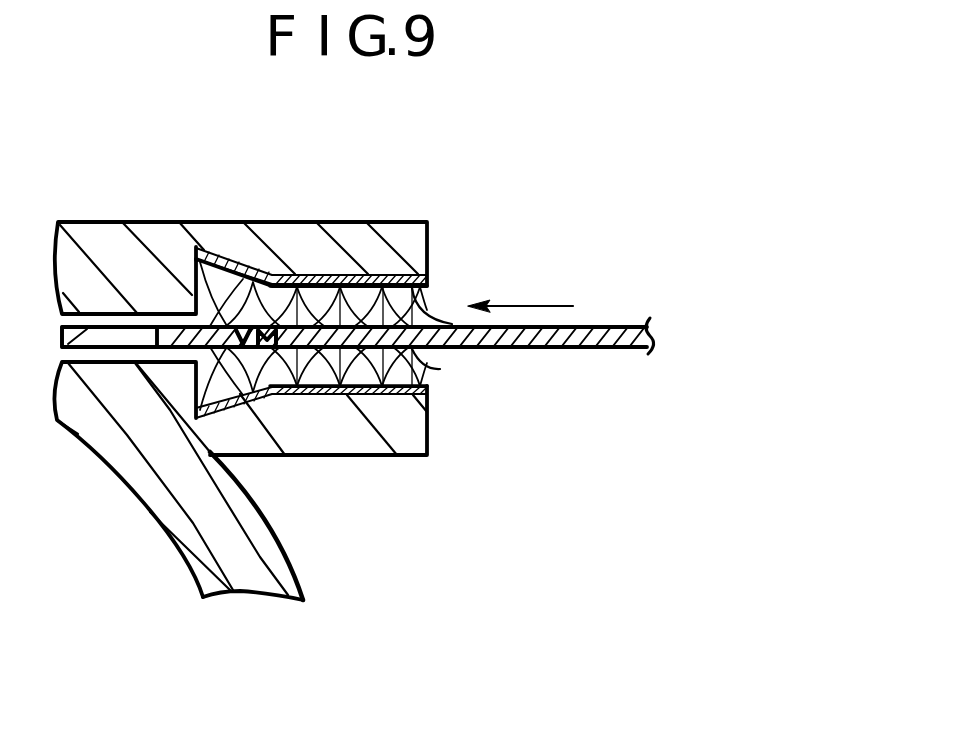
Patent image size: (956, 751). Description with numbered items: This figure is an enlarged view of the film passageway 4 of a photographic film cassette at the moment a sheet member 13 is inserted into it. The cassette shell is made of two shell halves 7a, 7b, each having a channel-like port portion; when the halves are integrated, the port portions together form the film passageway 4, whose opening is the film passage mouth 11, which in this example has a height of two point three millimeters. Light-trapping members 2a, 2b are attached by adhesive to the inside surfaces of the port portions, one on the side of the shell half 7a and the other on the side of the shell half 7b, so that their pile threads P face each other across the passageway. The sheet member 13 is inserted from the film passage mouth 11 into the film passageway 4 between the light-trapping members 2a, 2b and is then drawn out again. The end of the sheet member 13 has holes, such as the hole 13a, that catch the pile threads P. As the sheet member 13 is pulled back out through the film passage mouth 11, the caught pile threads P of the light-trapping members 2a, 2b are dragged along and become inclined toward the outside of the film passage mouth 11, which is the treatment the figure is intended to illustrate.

The shell half 7b is at (109, 248).
The light-trapping member 2b is at (307, 274).
The film passage mouth 11 is at (432, 302).
The sheet member 13 is at (604, 325).
The pile threads P is at (440, 369).
The hole 13a is at (104, 330).
The light-trapping member 2a is at (312, 393).
The film passageway 4 is at (393, 373).
The shell half 7a is at (298, 571).